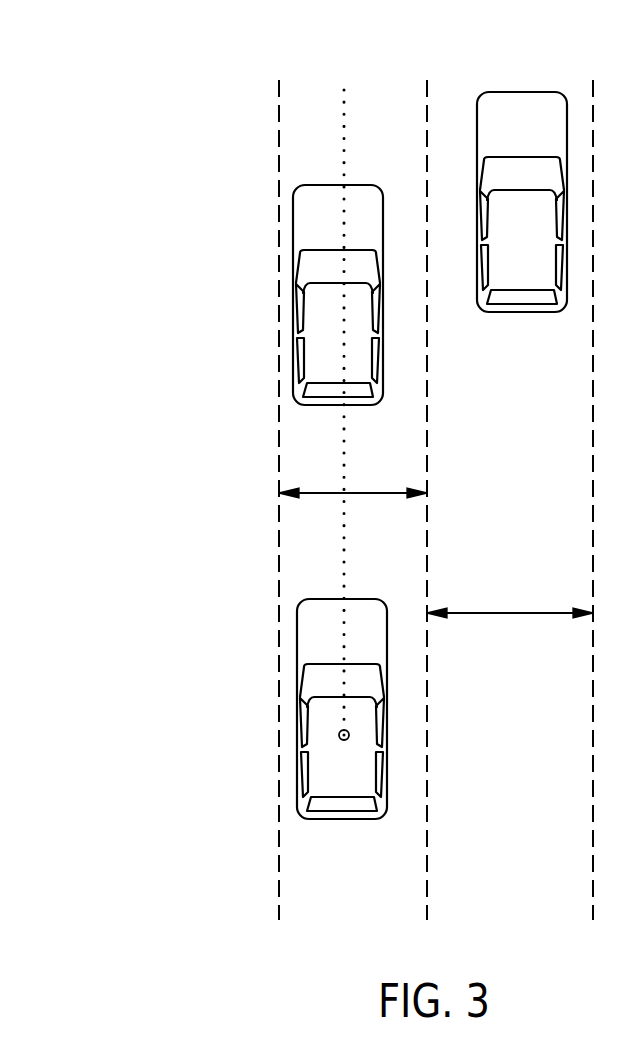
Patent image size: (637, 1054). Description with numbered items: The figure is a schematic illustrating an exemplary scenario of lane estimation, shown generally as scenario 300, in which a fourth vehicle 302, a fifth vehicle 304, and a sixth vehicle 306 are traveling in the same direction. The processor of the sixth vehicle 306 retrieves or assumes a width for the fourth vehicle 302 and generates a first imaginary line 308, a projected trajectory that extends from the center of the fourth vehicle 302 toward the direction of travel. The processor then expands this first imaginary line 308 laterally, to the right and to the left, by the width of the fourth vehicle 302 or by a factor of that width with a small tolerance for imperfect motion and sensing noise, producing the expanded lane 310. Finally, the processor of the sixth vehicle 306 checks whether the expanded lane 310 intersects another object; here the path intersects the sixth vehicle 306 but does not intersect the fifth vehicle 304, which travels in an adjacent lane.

The driving scenario environment 300 is at (87, 60).
The fourth vehicle 302 is at (298, 605).
The fifth vehicle 304 is at (517, 91).
The sixth vehicle 306 is at (356, 184).
The first imaginary line 308 is at (343, 97).
The expanded lane of travel 310 is at (278, 415).